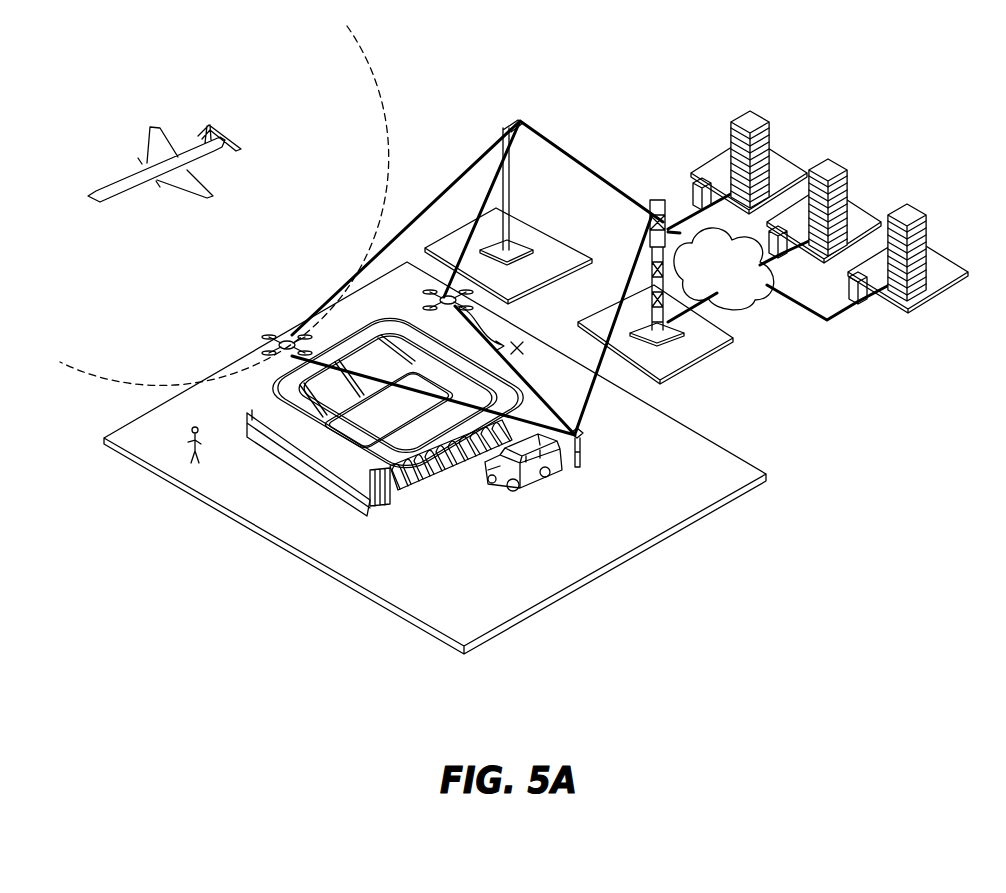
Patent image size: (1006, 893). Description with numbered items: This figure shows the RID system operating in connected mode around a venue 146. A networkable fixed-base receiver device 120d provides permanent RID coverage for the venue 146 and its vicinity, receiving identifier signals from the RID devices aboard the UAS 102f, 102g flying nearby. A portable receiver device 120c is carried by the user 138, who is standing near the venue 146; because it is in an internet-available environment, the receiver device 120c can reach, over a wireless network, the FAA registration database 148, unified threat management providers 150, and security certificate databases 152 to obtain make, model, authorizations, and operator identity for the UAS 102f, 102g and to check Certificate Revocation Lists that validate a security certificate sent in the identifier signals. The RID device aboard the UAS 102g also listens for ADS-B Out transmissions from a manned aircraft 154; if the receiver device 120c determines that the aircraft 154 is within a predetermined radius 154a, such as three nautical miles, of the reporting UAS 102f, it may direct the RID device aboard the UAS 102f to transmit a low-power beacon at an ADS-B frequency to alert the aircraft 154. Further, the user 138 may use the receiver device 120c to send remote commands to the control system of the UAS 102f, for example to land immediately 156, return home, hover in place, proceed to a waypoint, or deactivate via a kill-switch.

The manned aircraft 154 is at (150, 124).
The predetermined radius 154a is at (381, 97).
The networkable fixed-base receiver device 120d is at (513, 210).
The UAS 102f is at (417, 305).
The UAS 102g is at (288, 360).
The land immediately command 156 is at (519, 347).
The receiver device 120c is at (572, 431).
The user 138 is at (586, 440).
The venue 146 is at (390, 498).
The FAA registration database 148 is at (757, 120).
The unified threat management (UTM) providers 150 is at (833, 165).
The security certificate databases 152 is at (907, 212).